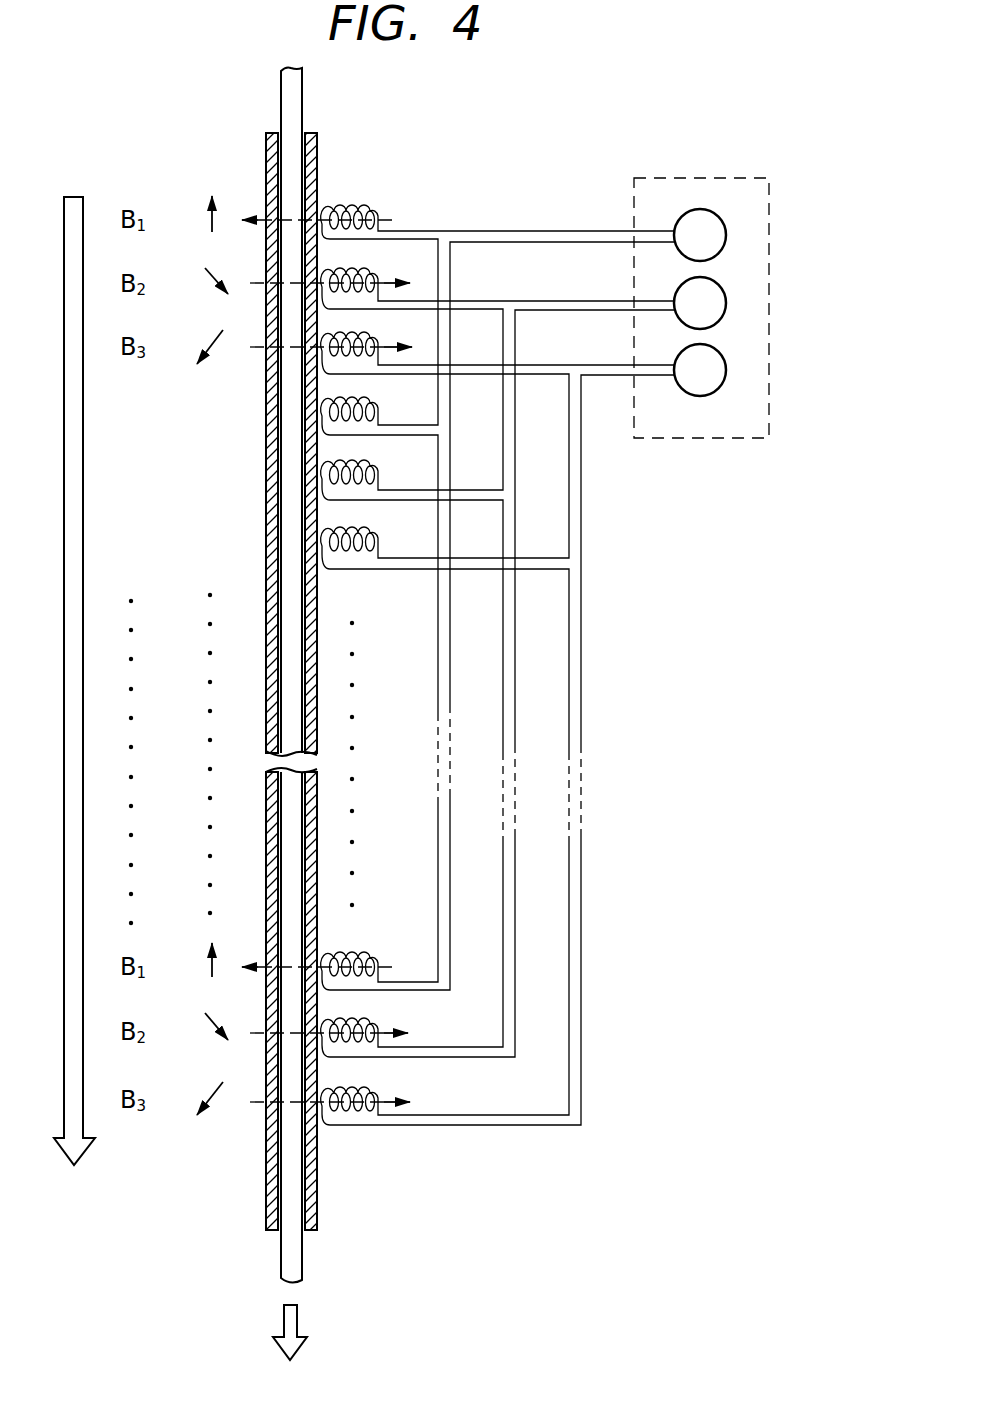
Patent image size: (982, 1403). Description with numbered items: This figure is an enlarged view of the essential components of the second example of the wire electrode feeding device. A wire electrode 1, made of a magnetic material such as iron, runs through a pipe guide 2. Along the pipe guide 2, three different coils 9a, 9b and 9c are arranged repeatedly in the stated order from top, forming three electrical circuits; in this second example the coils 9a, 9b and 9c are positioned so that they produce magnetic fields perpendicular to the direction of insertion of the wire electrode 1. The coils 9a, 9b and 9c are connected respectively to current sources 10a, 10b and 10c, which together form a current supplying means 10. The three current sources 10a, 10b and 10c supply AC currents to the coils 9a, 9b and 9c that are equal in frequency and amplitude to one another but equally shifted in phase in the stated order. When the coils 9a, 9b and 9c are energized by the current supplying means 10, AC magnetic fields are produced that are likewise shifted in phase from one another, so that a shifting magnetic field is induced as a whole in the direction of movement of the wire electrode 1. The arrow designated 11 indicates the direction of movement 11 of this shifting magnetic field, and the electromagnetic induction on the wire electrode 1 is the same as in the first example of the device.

The wire electrode 1 is at (302, 96).
The pipe guide 2 is at (317, 157).
The coil 9a is at (371, 205).
The coil 9b is at (377, 268).
The coil 9c is at (378, 333).
The current supplying means 10 is at (740, 178).
The current source 10a is at (726, 232).
The current source 10b is at (726, 302).
The current source 10c is at (726, 368).
The direction of movement of the shifting magnetic field 11 is at (83, 205).